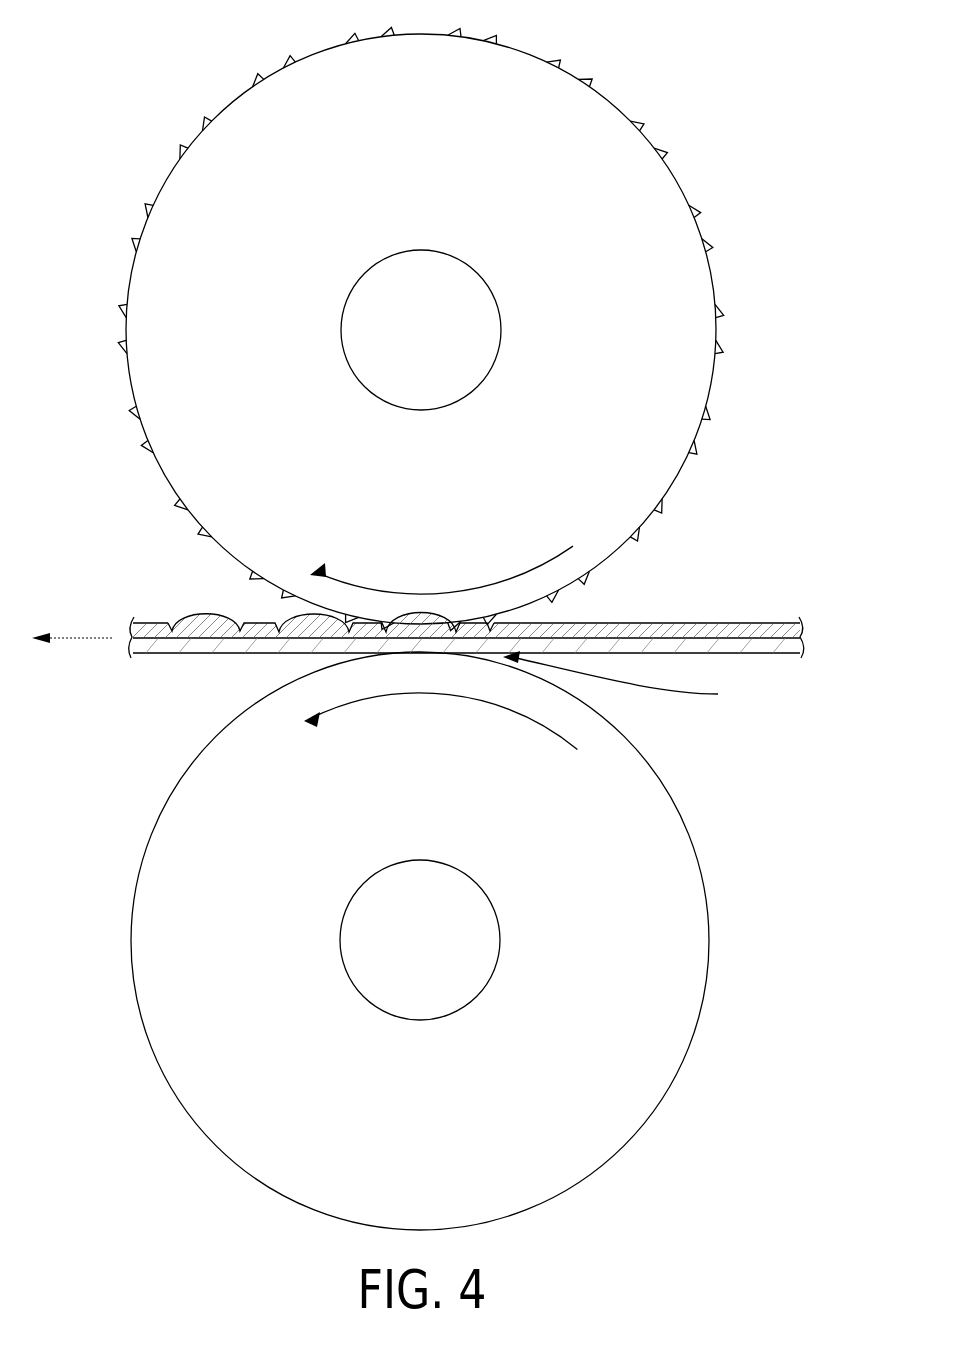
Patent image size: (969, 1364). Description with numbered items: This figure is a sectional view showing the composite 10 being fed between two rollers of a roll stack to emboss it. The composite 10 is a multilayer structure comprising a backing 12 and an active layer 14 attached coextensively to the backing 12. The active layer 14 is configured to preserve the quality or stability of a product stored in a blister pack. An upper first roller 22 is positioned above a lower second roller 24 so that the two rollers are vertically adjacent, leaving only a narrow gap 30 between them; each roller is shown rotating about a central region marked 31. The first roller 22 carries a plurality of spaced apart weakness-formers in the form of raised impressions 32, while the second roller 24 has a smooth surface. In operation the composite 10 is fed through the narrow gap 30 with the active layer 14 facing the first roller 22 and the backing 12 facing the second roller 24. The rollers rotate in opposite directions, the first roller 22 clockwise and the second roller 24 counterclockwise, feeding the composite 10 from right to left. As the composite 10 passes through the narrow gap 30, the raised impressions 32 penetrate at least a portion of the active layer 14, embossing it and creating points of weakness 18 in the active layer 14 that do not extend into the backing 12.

The composite 10 is at (463, 615).
The backing 12 is at (190, 648).
The active layer 14 is at (450, 601).
The points of weakness 18 is at (278, 632).
The first roller 22 is at (468, 315).
The second roller 24 is at (655, 882).
The narrow gap 30 is at (626, 680).
The roller axle 31 is at (420, 635).
The raised impressions 32 is at (559, 58).